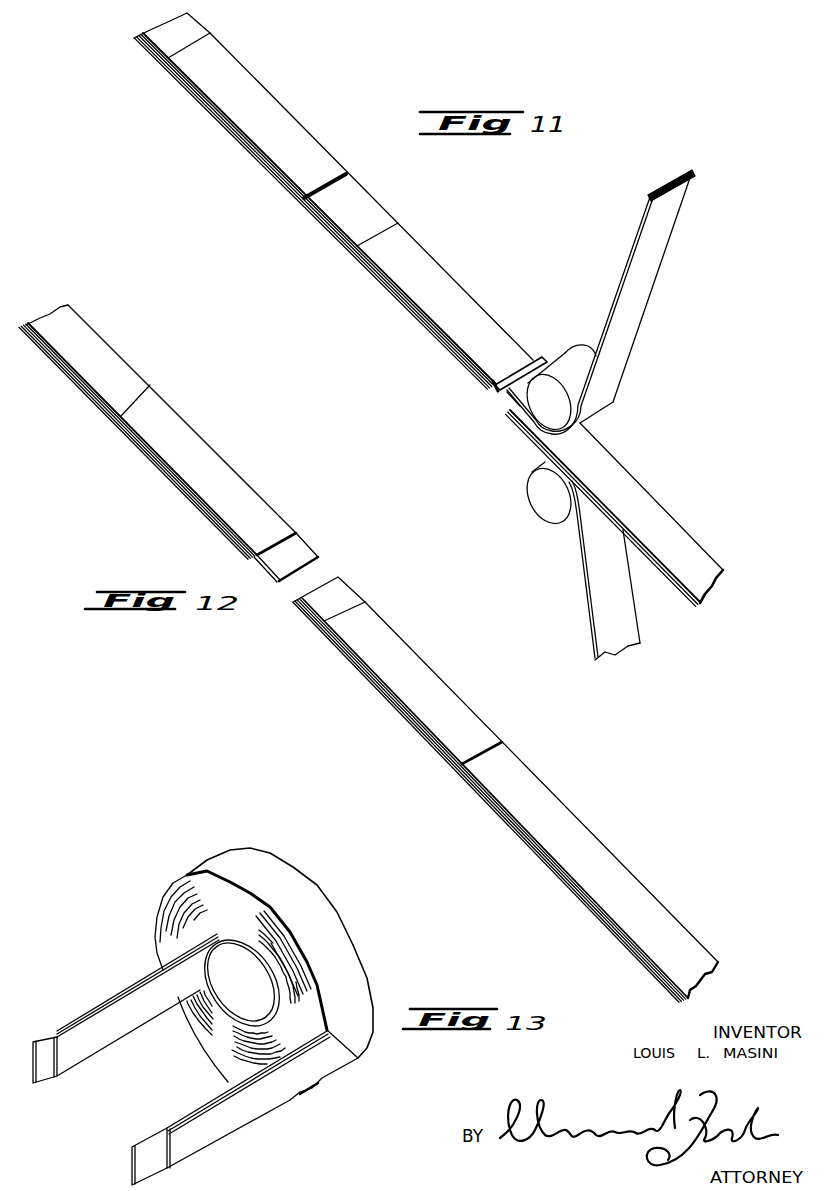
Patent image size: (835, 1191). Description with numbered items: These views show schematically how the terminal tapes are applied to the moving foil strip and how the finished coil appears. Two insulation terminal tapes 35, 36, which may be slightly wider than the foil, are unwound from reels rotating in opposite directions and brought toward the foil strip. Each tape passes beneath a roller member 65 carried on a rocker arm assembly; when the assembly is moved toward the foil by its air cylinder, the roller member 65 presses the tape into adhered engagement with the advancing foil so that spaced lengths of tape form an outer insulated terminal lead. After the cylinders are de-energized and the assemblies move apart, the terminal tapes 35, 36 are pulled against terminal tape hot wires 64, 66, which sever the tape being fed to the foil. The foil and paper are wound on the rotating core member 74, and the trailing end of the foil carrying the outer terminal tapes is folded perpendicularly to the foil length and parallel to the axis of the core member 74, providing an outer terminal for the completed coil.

In FIG. 11, the terminal tape 35 is at (653, 288).
In FIG. 11, the terminal tape 36 is at (582, 580).
In FIG. 11, the terminal tape hot wire 64 is at (535, 357).
In FIG. 11, the roller member 65 is at (578, 363).
In FIG. 11, the terminal tape hot wire 66 is at (505, 416).
In FIG. 13, the core member 74 is at (212, 1032).